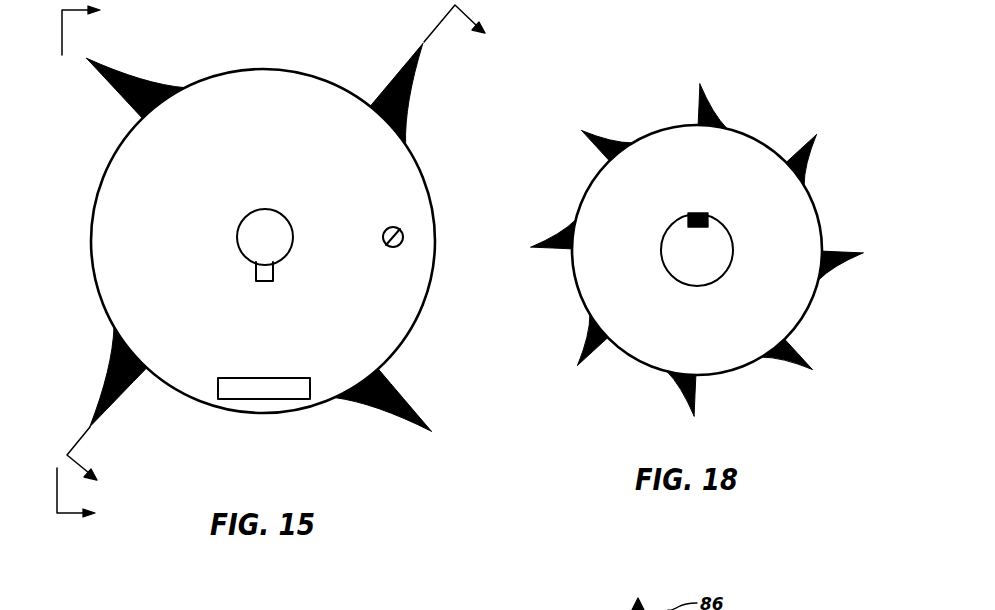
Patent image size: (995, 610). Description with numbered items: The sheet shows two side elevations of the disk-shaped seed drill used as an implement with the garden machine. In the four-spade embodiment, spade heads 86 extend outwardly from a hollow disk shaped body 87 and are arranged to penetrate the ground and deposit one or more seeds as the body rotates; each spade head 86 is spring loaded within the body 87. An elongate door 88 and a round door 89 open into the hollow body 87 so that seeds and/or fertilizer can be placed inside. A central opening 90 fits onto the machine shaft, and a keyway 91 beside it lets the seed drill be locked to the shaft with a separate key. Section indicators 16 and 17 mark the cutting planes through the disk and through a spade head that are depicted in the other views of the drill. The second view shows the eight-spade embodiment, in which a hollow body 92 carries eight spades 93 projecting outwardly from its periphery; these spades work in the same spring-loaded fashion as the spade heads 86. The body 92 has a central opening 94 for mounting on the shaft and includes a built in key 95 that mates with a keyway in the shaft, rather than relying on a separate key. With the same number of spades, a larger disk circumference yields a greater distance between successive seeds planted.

In FIG. 15, the section line for FIG. 16 is at (92, 263).
In FIG. 15, the section line for FIG. 17 is at (289, 250).
In FIG. 15, the spade head 86 is at (123, 99).
In FIG. 15, the hollow disk shaped body 87 is at (110, 222).
In FIG. 15, the elongate door 88 is at (253, 378).
In FIG. 15, the round door 89 is at (384, 229).
In FIG. 15, the central opening 90 is at (258, 230).
In FIG. 15, the keyway 91 is at (255, 274).
In FIG. 18, the hollow body 92 is at (810, 223).
In FIG. 18, the spades 93 is at (835, 264).
In FIG. 18, the central opening 94 is at (719, 247).
In FIG. 18, the built in key 95 is at (698, 228).